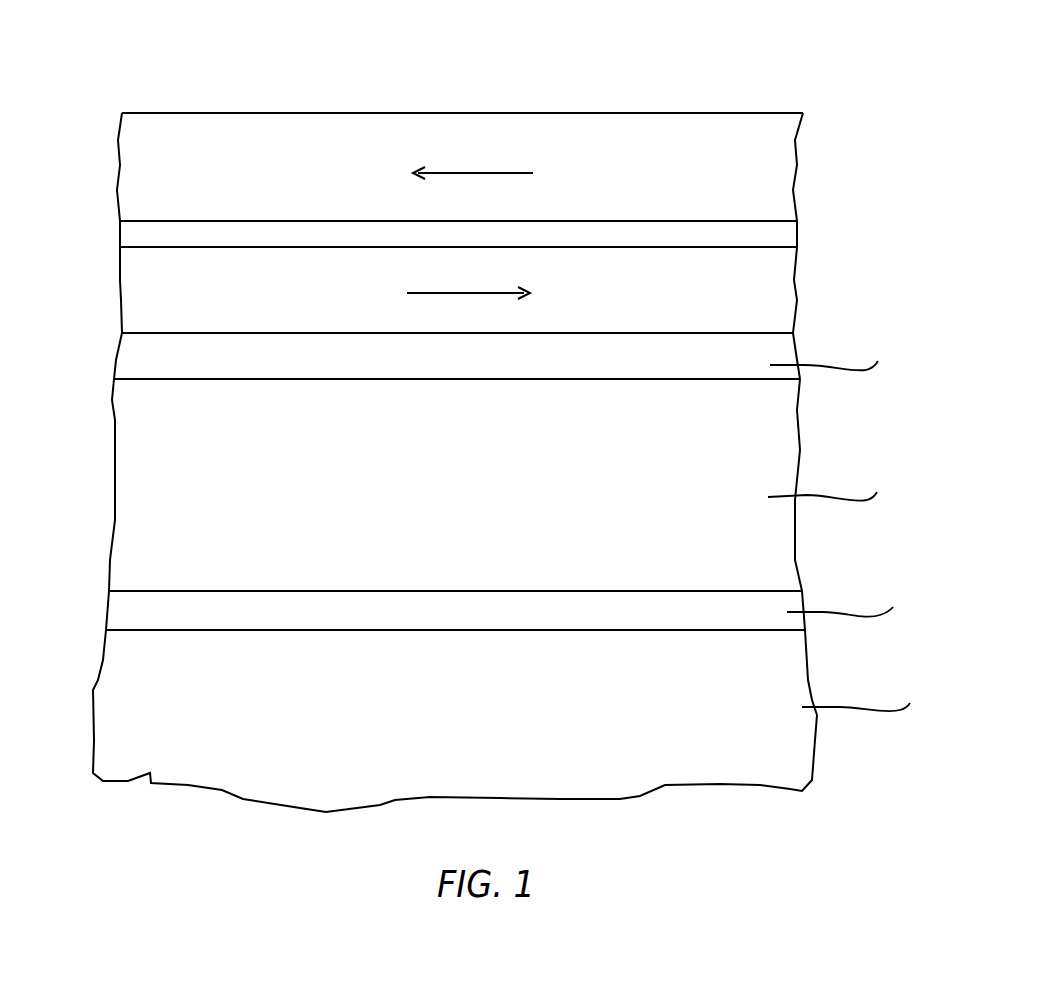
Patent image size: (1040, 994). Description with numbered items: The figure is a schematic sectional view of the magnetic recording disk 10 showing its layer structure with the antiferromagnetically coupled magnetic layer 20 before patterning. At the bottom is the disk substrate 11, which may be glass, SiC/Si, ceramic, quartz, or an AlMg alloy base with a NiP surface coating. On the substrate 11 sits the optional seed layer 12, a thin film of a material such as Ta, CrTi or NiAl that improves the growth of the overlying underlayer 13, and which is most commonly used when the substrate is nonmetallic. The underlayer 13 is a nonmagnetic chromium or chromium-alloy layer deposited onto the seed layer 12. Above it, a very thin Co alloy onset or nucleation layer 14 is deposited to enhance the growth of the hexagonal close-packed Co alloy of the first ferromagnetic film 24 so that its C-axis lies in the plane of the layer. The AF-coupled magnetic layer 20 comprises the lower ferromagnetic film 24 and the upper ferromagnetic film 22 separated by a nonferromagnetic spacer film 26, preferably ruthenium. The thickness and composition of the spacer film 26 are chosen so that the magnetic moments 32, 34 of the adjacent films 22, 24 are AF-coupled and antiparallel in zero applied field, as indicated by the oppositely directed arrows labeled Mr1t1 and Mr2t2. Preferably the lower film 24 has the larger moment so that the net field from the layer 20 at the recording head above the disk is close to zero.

The disk 10 is at (787, 77).
The disk substrate 11 is at (164, 709).
The seed layer 12 is at (164, 611).
The underlayer 13 is at (166, 522).
The nucleation layer 14 is at (171, 356).
The AF-coupled magnetic layer 20 is at (805, 117).
The ferromagnetic film 22 is at (172, 168).
The ferromagnetic film 24 is at (172, 287).
The nonferromagnetic spacer film 26 is at (172, 231).
The magnetic moment 32 is at (470, 174).
The magnetic moment 34 is at (492, 292).